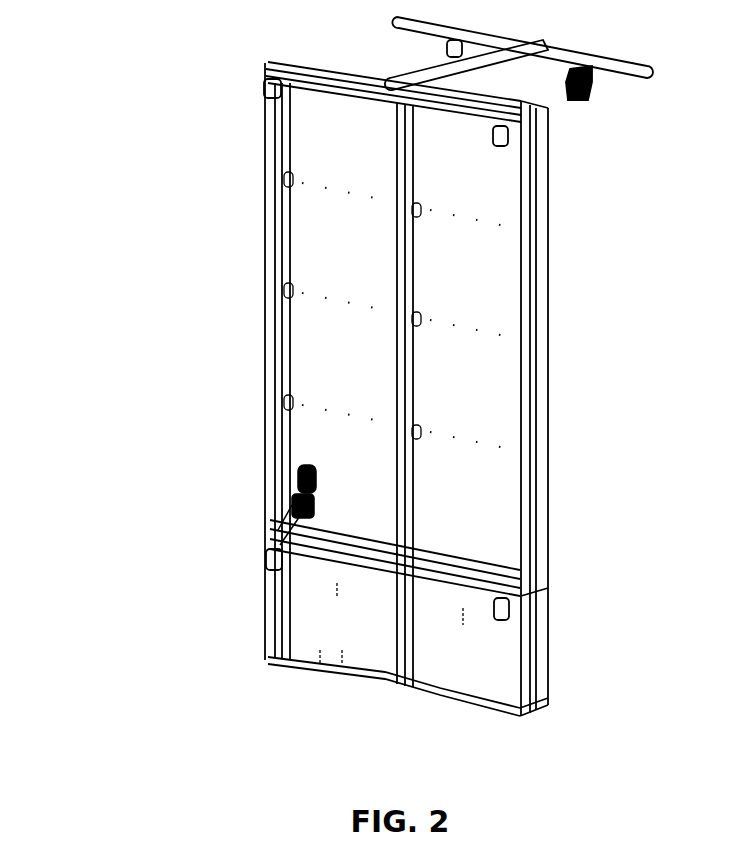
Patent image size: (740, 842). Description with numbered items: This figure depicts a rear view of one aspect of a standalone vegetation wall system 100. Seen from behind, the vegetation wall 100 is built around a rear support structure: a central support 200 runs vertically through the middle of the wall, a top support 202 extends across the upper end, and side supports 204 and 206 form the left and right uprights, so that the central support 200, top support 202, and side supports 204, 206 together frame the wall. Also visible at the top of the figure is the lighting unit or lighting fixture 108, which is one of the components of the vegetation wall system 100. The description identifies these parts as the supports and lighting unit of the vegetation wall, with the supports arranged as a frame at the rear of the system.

The standalone vegetation wall system 100 is at (142, 124).
The lighting unit 108 is at (521, 75).
The central support 200 is at (422, 249).
The top support 202 is at (298, 57).
The side support 204 is at (266, 348).
The side support 206 is at (508, 326).